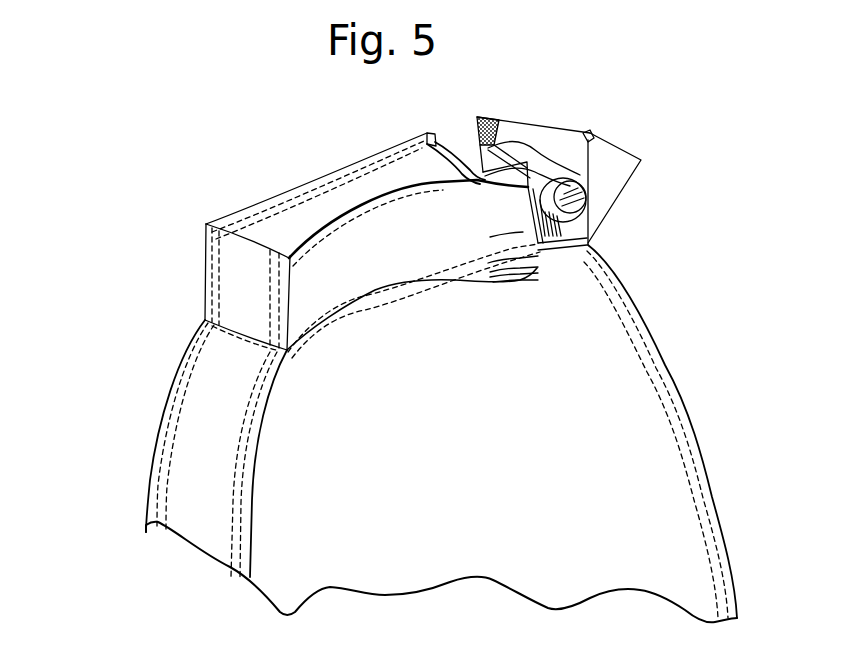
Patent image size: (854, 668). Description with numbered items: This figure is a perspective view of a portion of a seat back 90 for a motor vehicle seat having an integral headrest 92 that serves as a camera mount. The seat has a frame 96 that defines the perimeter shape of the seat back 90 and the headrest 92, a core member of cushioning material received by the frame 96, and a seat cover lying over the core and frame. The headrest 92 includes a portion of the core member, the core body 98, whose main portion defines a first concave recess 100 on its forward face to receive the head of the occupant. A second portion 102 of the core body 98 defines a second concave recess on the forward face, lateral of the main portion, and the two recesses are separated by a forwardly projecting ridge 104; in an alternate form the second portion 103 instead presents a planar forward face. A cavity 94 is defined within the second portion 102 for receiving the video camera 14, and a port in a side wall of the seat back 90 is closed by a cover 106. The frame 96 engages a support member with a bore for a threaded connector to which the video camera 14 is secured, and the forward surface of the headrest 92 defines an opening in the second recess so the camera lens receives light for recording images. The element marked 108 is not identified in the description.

The video camera 14 is at (485, 117).
The seat back 90 is at (202, 468).
The integral headrest 92 is at (190, 318).
The cavity 94 is at (497, 115).
The frame 96 is at (697, 470).
The core body 98 is at (427, 133).
The first concave recess 100 is at (363, 230).
The second portion of the core body 102 is at (577, 170).
The second portion with planar forward face 103 is at (540, 267).
The forwardly projecting ridge 104 is at (605, 268).
The cover 106 is at (612, 160).
The slats 108 is at (570, 220).